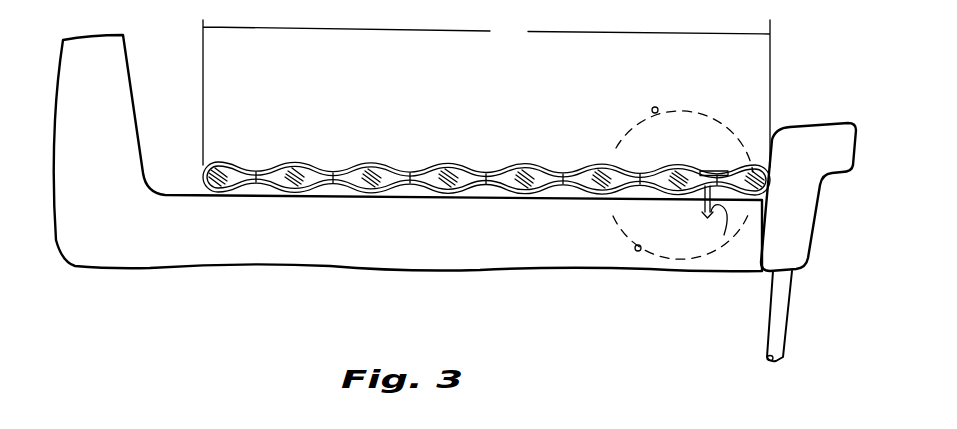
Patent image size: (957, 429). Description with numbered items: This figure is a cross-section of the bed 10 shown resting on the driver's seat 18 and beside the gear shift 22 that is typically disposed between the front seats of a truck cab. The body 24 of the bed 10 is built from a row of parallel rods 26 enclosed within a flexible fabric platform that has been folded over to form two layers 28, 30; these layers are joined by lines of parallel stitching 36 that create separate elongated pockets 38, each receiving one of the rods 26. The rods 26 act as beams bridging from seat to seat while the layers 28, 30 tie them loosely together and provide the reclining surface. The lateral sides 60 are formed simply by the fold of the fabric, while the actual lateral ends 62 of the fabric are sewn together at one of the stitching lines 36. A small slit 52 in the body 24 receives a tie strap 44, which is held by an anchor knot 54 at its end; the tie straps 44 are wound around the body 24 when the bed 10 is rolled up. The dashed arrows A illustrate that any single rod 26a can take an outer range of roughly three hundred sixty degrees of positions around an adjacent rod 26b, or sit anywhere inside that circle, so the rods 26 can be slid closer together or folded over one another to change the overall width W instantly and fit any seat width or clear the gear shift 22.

The bed 10 is at (233, 137).
The driver's seat 18 is at (178, 246).
The gear shift 22 is at (796, 243).
The body 24 is at (387, 197).
The rods 26 is at (370, 172).
The single rod 26a is at (757, 178).
The adjacent rod 26b is at (680, 182).
The layer 28 is at (470, 186).
The layer 30 is at (527, 174).
The parallel stitching 36 is at (257, 168).
The elongated pockets 38 is at (318, 172).
The tie straps 44 is at (724, 235).
The slits 52 is at (702, 196).
The anchor knots 54 is at (708, 171).
The lateral sides 60 is at (203, 182).
The lateral ends 62 is at (393, 180).
The dashed arrows A is at (655, 107).
The width W is at (486, 92).